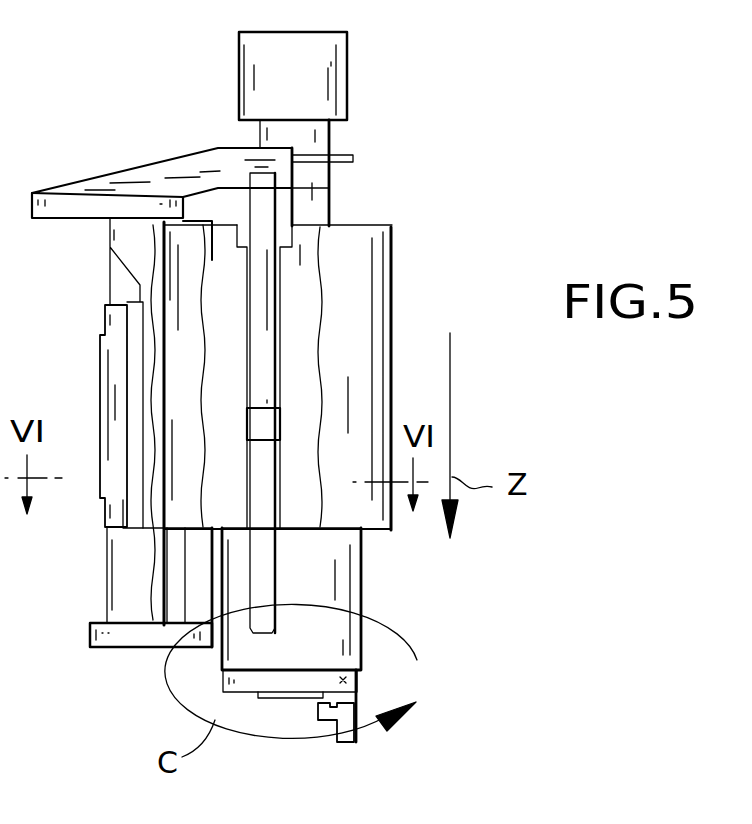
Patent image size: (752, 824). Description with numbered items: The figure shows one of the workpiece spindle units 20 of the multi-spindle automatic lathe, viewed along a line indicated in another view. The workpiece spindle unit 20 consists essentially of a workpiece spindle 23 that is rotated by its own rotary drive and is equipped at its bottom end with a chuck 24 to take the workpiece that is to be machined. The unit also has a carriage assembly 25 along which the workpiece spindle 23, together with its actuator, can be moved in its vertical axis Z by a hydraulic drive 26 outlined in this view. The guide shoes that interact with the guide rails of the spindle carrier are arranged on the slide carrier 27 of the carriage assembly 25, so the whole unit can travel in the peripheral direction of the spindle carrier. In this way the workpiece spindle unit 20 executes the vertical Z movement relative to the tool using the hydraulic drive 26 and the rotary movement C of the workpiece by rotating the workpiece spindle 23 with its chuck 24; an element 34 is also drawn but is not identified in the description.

The workpiece spindle unit 20 is at (358, 392).
The workpiece spindle 23 is at (343, 583).
The chuck 24 is at (350, 683).
The carriage assembly 25 is at (192, 578).
The hydraulic drive 26 is at (267, 288).
The slide carrier 27 is at (140, 240).
The side plate 34 is at (113, 365).